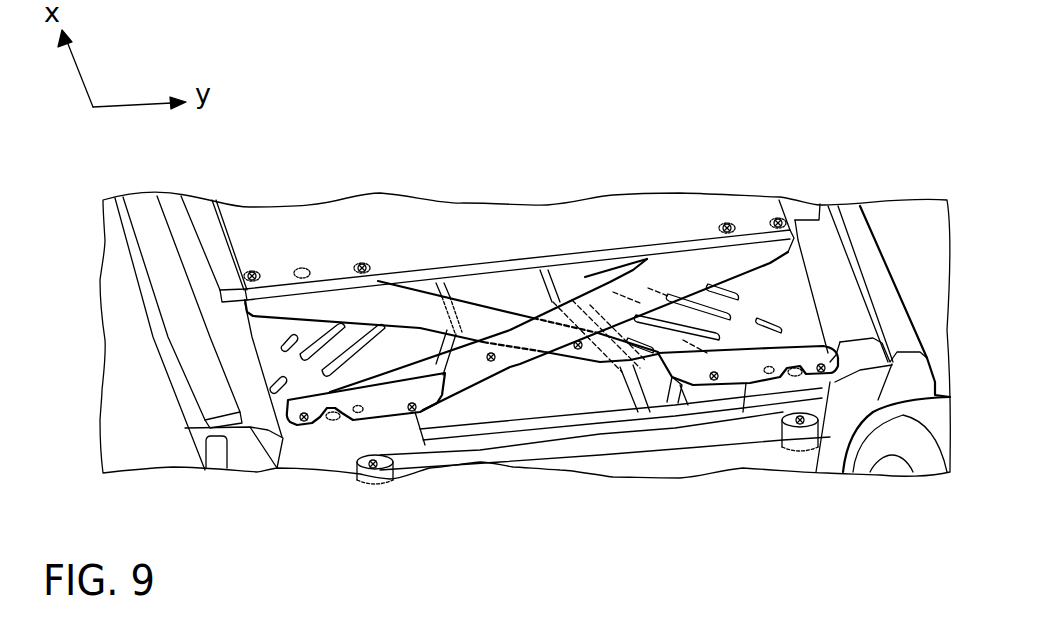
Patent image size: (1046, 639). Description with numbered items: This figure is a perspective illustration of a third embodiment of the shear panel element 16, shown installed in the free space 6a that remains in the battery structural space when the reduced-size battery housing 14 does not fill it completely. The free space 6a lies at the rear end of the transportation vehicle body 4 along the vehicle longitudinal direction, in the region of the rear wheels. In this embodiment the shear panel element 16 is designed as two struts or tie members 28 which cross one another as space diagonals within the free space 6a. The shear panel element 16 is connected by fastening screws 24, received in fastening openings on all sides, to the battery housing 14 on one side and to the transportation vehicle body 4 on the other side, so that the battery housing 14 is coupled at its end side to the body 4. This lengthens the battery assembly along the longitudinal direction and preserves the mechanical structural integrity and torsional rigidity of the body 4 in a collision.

The transportation vehicle body 4 is at (845, 272).
The free space 6a is at (270, 352).
The battery housing 14 is at (430, 252).
The shear panel element 16 is at (568, 513).
The fastening screws 24 is at (252, 275).
The tie members 28 is at (492, 361).